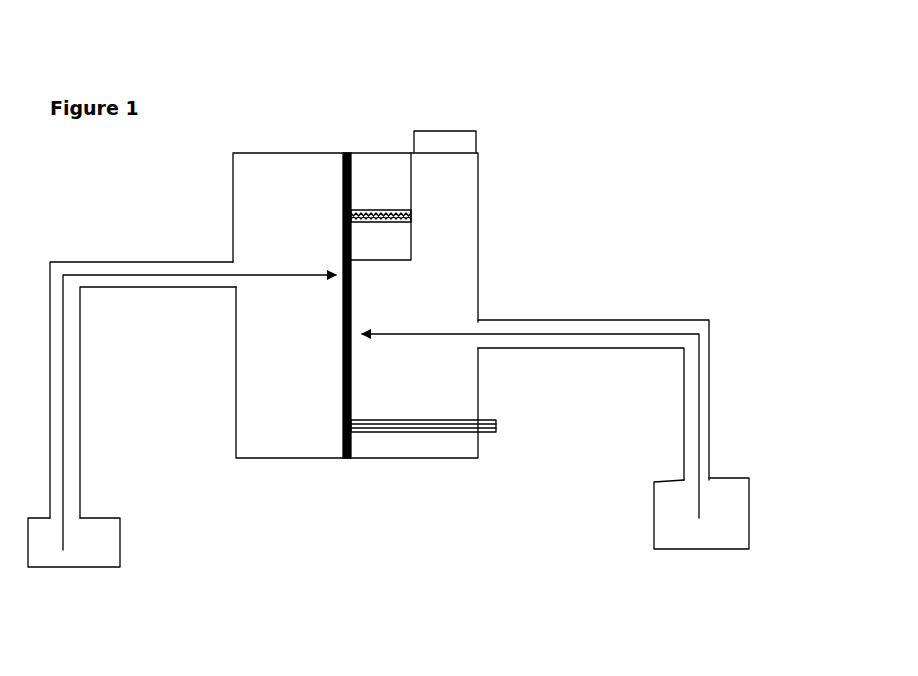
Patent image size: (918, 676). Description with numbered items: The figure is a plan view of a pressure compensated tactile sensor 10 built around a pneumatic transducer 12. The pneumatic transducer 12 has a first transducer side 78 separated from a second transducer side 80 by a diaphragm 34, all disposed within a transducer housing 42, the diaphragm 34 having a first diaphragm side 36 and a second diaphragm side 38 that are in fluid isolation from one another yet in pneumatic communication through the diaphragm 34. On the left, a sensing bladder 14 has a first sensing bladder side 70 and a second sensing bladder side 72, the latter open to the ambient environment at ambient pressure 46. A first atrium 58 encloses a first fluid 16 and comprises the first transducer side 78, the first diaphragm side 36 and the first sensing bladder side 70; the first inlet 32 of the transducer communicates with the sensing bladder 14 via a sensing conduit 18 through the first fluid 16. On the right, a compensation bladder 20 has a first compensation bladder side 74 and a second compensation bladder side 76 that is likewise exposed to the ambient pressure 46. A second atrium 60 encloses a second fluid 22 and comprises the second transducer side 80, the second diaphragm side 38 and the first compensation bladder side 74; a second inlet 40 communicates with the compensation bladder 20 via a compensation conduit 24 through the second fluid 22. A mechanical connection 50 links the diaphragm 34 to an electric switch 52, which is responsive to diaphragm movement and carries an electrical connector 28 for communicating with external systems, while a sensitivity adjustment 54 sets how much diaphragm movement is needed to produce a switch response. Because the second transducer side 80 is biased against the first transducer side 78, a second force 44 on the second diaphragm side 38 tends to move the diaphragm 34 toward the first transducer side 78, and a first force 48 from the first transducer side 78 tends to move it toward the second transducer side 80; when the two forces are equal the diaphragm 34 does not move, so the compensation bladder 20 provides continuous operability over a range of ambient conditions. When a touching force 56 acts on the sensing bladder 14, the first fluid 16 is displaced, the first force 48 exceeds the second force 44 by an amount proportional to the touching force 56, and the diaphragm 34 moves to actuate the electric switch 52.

The pressure compensated tactile sensor 10 is at (668, 96).
The pneumatic transducer 12 is at (491, 178).
The sensing bladder 14 is at (120, 545).
The first fluid 16 is at (273, 197).
The sensing conduit 18 is at (83, 397).
The compensation bladder 20 is at (654, 537).
The second fluid 22 is at (445, 300).
The compensation conduit 24 is at (712, 423).
The electrical connector 28 is at (465, 131).
The first inlet 32 is at (155, 287).
The diaphragm 34 is at (340, 362).
The first diaphragm side 36 is at (343, 405).
The second diaphragm side 38 is at (352, 305).
The second inlet 40 is at (559, 320).
The transducer housing 42 is at (293, 462).
The second force 44 is at (589, 335).
The ambient pressure 46 is at (41, 572).
The first force 48 is at (138, 270).
The mechanical connection 50 is at (368, 210).
The electric switch 52 is at (464, 239).
The sensitivity adjustment 54 is at (423, 432).
The touching force 56 is at (122, 559).
The first atrium 58 is at (275, 345).
The second atrium 60 is at (400, 378).
The first sensing bladder side 70 is at (108, 514).
The second sensing bladder side 72 is at (112, 567).
The first compensation bladder side 74 is at (749, 520).
The second compensation bladder side 76 is at (729, 549).
The first transducer side 78 is at (293, 202).
The second transducer side 80 is at (388, 178).